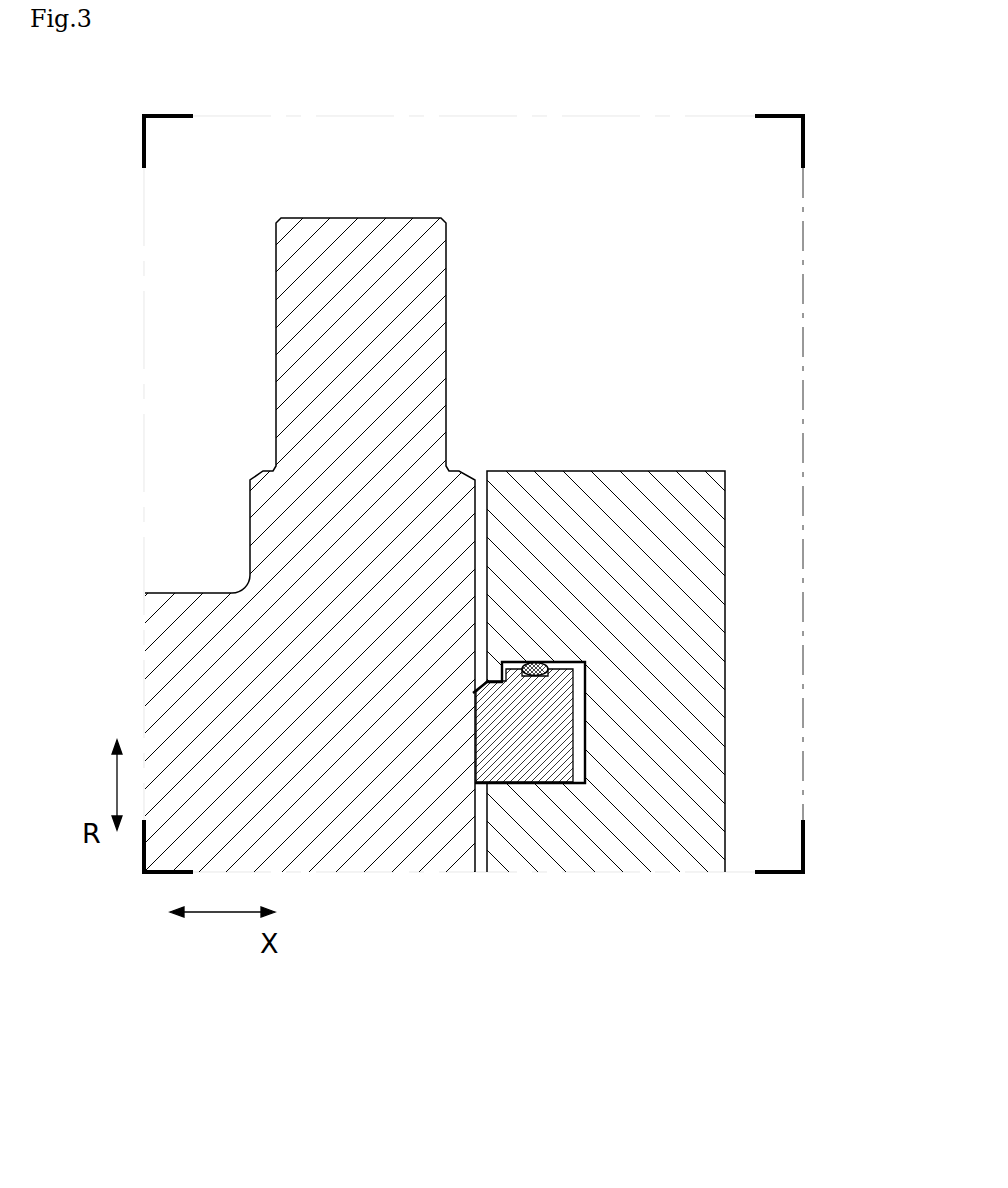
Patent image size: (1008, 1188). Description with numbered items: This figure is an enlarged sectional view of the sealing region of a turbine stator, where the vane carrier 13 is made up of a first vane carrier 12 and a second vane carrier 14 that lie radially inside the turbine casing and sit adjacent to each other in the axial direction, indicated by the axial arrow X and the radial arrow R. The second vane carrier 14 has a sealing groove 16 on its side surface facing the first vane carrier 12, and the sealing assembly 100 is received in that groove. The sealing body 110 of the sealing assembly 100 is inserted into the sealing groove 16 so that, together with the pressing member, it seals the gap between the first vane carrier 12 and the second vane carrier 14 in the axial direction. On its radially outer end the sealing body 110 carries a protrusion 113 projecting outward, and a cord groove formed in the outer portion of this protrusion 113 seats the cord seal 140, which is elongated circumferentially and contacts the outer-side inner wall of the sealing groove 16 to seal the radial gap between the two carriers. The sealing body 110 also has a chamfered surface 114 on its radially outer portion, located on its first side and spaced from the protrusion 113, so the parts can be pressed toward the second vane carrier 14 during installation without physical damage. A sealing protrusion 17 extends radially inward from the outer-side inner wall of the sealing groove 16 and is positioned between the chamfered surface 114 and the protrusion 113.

The first vane carrier 12 is at (403, 830).
The second vane carrier 14 is at (562, 832).
The vane carrier 13 is at (553, 1003).
The sealing groove 16 is at (584, 714).
The sealing protrusion 17 is at (482, 686).
The sealing assembly 100 is at (600, 683).
The sealing body 110 is at (550, 762).
The protrusion 113 is at (565, 680).
The chamfered surface 114 is at (490, 683).
The cord seal 140 is at (537, 662).